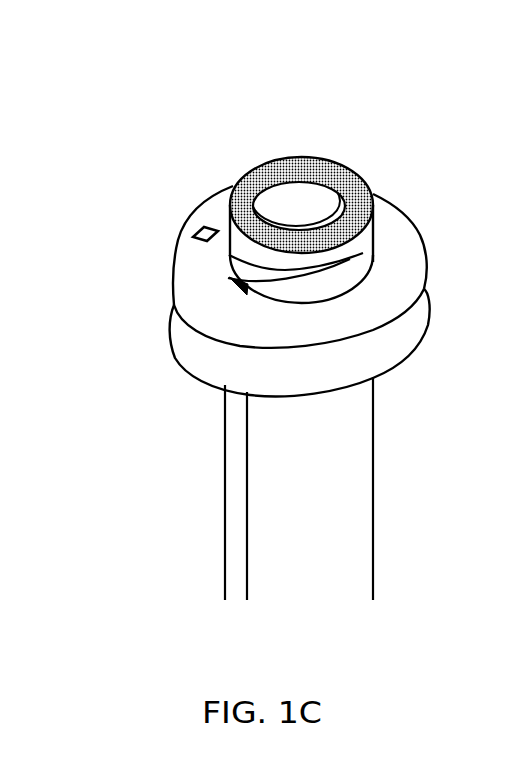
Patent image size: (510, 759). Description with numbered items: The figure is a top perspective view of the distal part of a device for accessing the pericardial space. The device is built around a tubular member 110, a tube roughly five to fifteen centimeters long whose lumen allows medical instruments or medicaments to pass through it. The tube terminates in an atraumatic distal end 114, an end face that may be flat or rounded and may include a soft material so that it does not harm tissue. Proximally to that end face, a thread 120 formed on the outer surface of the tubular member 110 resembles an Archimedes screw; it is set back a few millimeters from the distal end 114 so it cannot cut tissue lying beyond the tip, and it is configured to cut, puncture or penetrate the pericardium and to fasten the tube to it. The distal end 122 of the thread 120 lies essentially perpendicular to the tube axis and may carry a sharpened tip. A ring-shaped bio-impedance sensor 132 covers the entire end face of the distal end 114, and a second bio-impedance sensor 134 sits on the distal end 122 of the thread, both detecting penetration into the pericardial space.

The tubular member 110 is at (333, 428).
The atraumatic distal end 114 is at (297, 157).
The thread 120 is at (395, 253).
The distal end of thread 122 is at (225, 262).
The bio-impedance sensor 132 is at (257, 168).
The bio-impedance sensor 134 is at (190, 228).